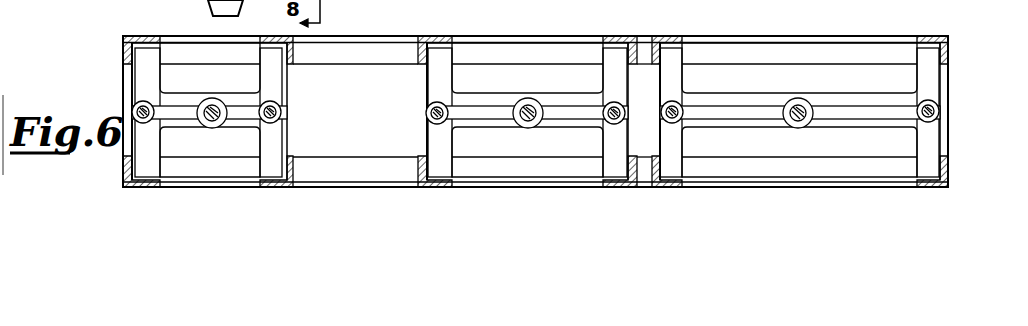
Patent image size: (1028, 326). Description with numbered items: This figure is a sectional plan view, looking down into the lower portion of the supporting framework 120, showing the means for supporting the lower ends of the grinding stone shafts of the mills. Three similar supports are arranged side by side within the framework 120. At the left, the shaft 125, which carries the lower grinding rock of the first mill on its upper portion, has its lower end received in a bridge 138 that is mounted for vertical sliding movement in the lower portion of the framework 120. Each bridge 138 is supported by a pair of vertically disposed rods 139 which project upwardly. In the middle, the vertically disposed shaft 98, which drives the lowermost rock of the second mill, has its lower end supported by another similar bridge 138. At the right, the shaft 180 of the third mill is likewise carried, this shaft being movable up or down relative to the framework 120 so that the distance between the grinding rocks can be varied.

The supporting framework 120 is at (407, 36).
The bridge 138 is at (243, 103).
The vertically disposed rods 139 is at (139, 107).
The shaft 125 is at (218, 90).
The vertically disposed shaft 98 is at (526, 100).
The shaft 180 is at (797, 100).